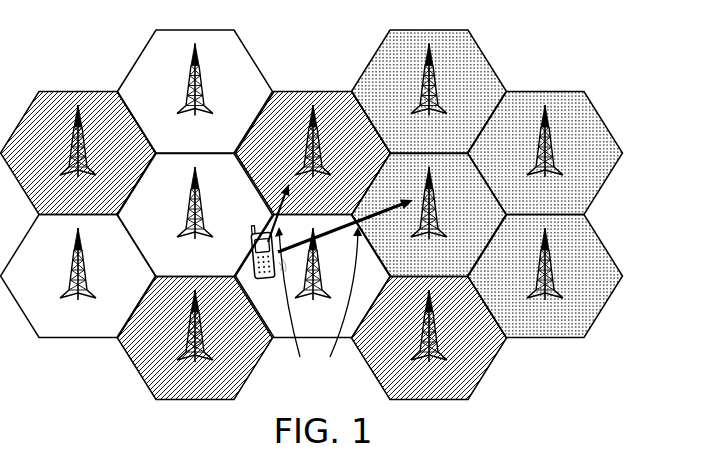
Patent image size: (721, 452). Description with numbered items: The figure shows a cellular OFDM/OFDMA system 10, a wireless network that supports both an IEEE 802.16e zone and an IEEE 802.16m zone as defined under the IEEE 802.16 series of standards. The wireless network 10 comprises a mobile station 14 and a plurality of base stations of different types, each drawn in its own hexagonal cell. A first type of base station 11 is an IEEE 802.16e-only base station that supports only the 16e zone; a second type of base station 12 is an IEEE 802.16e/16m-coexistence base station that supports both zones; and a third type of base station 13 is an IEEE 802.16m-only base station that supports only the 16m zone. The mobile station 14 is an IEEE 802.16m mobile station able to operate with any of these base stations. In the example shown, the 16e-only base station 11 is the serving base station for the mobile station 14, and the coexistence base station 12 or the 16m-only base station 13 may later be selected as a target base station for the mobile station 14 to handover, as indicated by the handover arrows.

The cellular OFDM/OFDMA system 10 is at (664, 62).
The IEEE 802.16e-only base station 11 is at (322, 251).
The IEEE 802.16e/16m-coexistence base station 12 is at (322, 128).
The IEEE 802.16m-only base station 13 is at (437, 192).
The mobile station 14 is at (268, 279).
The 802.16e cell 16e is at (196, 184).
The 802.16m cell 16m is at (487, 184).